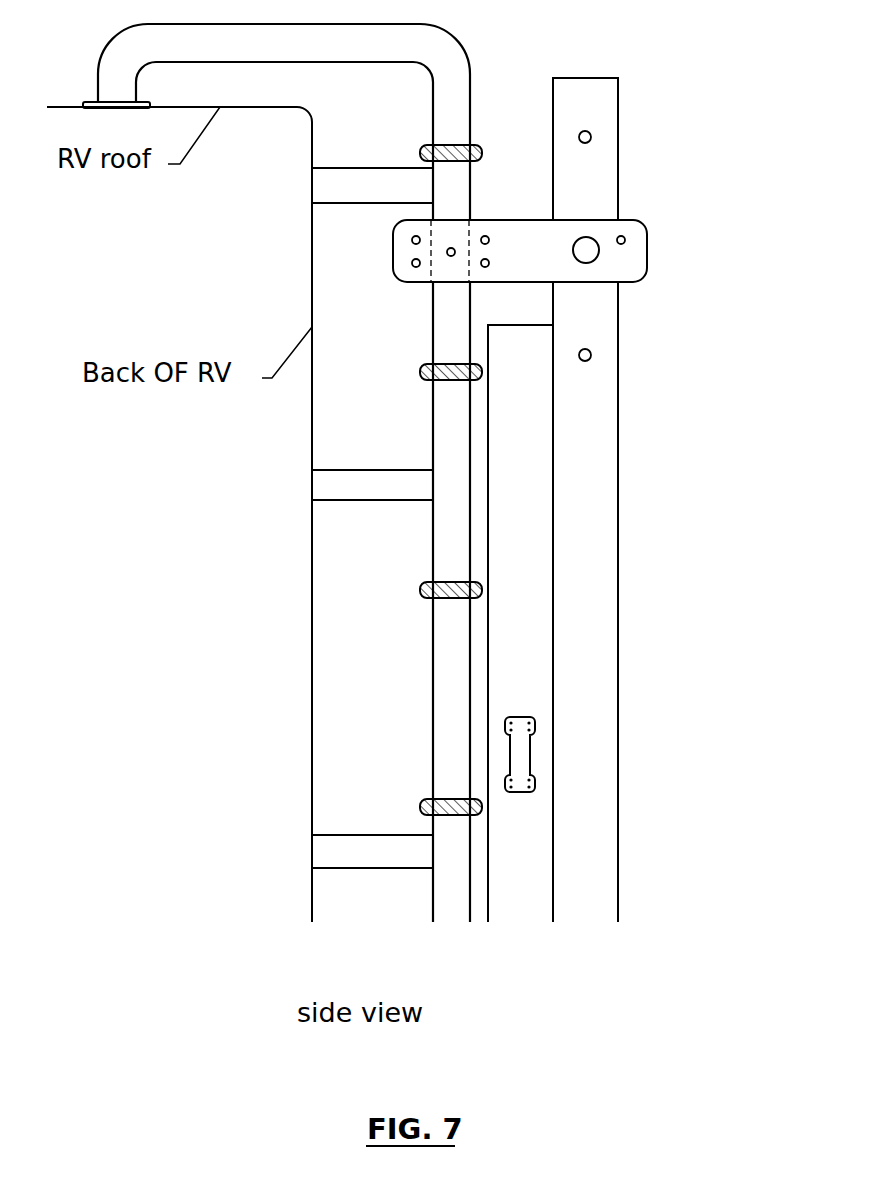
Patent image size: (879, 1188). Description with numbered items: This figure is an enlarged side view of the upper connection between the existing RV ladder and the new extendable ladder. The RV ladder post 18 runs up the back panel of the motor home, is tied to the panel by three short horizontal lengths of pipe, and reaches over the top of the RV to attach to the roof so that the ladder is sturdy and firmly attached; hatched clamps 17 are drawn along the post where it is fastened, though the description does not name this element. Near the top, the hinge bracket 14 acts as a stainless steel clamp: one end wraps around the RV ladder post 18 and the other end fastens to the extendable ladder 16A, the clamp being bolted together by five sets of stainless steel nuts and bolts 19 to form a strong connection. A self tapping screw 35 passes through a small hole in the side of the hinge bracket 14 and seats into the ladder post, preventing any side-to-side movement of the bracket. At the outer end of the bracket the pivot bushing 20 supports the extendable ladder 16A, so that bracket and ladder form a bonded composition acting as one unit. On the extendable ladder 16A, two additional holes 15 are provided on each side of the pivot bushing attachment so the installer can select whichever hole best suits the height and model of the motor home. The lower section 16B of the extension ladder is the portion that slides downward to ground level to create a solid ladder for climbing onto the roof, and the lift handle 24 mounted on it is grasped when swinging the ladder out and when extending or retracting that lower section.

The hinge bracket 14 is at (533, 263).
The additional 7/16" holes 15 is at (590, 133).
The extendable ladder 16A is at (618, 600).
The extension ladder section 16B is at (518, 523).
The tube clamps 17 is at (410, 593).
The RV ladder post 18 is at (455, 455).
The stainless steel nuts and bolts 19 is at (412, 241).
The pivot bushing 20 is at (600, 255).
The lift handle 24 is at (530, 753).
The self tapping screw 35 is at (448, 255).